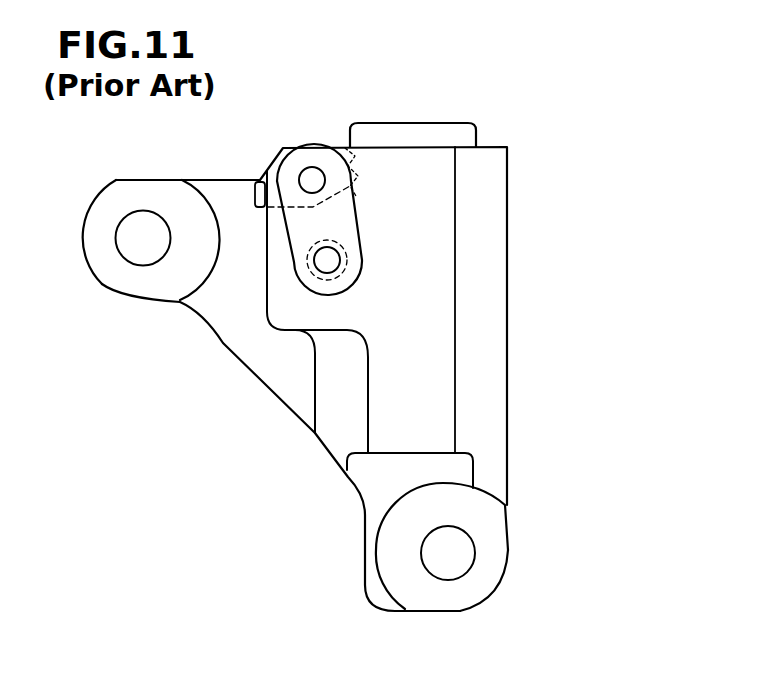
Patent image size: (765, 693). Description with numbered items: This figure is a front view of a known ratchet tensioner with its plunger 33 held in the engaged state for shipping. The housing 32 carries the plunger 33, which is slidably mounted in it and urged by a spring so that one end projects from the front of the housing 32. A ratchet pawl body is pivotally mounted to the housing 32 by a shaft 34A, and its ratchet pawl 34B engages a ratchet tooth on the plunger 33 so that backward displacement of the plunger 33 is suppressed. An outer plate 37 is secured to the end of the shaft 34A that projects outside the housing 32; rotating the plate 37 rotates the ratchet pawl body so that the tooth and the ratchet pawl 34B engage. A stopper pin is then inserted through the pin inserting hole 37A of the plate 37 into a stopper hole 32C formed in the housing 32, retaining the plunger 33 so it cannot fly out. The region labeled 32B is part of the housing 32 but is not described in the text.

The housing 32 is at (425, 395).
The boss of bracket 32B is at (138, 222).
The stopper hole 32C is at (305, 279).
The plunger 33 is at (445, 127).
The shaft 34A is at (312, 178).
The ratchet pawl 34B is at (340, 157).
The plate 37 is at (343, 215).
The pin inserting hole 37A is at (332, 262).